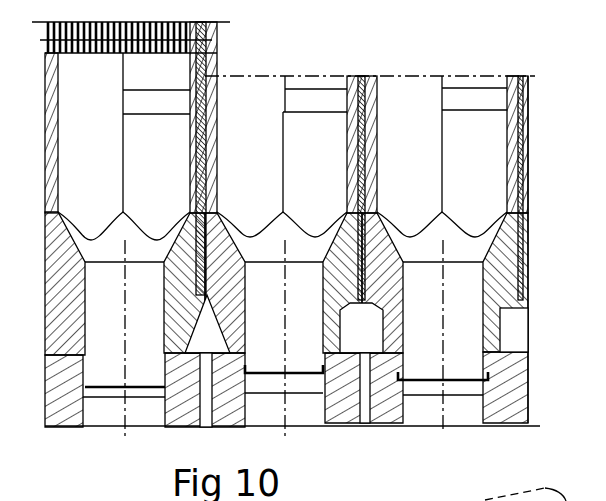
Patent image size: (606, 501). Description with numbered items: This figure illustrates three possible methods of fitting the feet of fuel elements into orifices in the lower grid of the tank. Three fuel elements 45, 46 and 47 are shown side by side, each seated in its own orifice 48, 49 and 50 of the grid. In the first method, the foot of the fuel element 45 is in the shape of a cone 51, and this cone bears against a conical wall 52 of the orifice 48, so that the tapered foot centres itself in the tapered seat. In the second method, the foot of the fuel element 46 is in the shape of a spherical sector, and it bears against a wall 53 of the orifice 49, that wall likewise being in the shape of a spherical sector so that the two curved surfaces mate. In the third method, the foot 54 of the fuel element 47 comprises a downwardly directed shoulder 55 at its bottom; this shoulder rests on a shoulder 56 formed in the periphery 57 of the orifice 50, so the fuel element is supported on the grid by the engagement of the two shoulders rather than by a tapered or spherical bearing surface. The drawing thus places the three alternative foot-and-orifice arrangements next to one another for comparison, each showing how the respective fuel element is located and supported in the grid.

The fuel element 45 is at (176, 128).
The fuel element 46 is at (323, 118).
The fuel element 47 is at (477, 122).
The orifice 48 is at (110, 417).
The orifice 49 is at (275, 413).
The orifice 50 is at (471, 413).
The cone 51 is at (65, 316).
The conical wall 52 is at (173, 338).
The wall 53 is at (245, 374).
The foot 54 is at (508, 292).
The downwardly directed shoulder 55 is at (492, 353).
The shoulder 56 is at (493, 355).
The periphery 57 is at (519, 350).